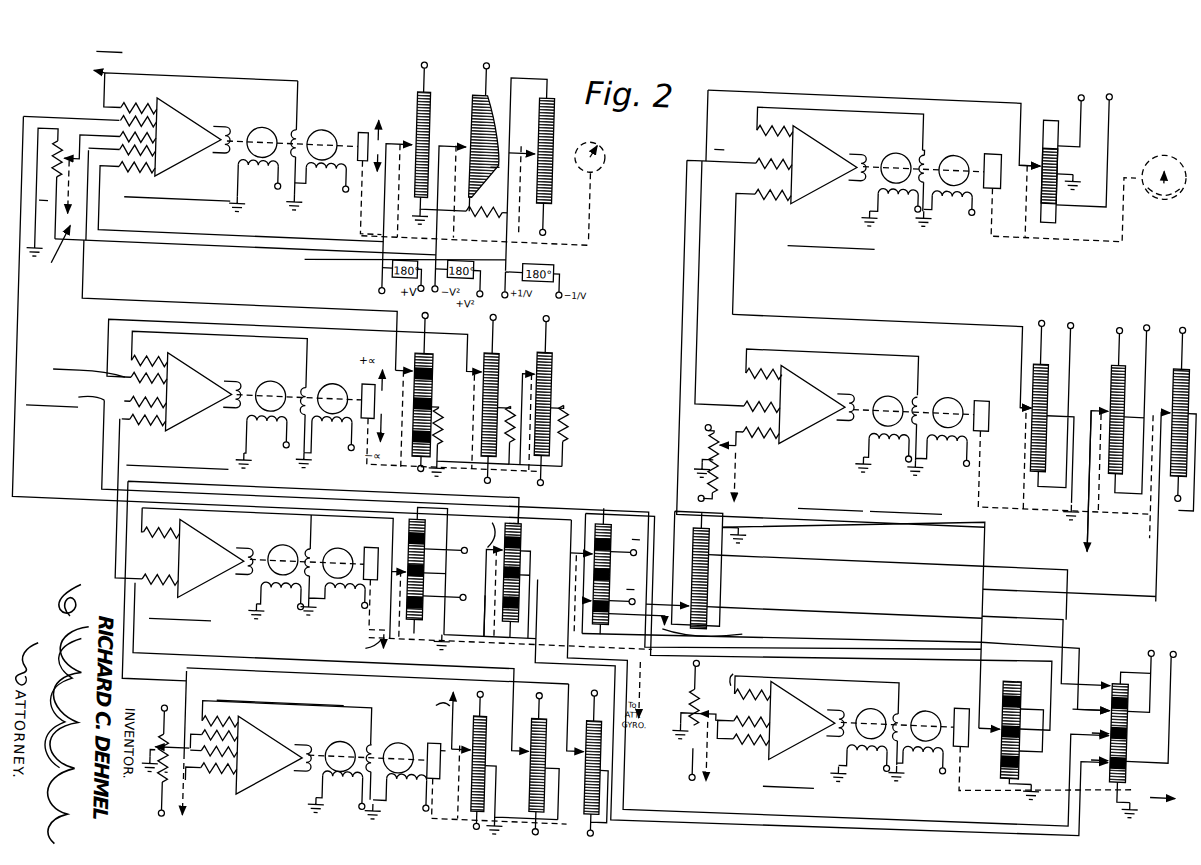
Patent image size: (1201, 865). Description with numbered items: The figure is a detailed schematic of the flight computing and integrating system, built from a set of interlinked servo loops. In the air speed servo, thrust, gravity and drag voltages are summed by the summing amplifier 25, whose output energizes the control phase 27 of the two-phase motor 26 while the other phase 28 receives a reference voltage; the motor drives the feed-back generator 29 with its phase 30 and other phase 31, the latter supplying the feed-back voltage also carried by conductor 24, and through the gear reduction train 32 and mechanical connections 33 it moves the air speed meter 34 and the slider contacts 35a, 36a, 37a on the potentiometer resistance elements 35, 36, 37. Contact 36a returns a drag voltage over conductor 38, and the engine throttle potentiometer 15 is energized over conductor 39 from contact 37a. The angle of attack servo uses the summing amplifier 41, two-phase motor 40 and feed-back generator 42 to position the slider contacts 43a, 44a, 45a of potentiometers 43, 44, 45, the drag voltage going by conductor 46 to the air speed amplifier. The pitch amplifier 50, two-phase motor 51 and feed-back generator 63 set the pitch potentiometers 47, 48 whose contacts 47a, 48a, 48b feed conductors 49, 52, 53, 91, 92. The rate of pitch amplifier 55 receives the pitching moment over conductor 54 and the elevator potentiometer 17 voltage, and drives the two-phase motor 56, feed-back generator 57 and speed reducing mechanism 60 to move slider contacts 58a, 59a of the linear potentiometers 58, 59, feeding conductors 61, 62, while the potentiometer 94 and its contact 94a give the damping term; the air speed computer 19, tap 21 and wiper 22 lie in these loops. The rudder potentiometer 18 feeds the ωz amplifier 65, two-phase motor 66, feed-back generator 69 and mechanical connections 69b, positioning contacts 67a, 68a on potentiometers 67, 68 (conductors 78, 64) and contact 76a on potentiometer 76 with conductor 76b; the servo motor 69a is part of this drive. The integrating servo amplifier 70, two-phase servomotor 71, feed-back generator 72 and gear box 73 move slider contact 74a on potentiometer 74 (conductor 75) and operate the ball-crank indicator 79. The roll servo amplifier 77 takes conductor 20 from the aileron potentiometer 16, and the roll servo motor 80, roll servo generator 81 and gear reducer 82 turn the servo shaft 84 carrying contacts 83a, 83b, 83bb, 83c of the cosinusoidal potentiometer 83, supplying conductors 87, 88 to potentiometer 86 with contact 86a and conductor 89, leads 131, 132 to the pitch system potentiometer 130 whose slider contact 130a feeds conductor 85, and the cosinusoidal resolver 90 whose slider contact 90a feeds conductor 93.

The engine throttle potentiometer 15 is at (57, 201).
The aileron potentiometer 16 is at (700, 731).
The elevator potentiometer 17 is at (177, 750).
The rudder potentiometer 18 is at (711, 456).
The air speed computer 19 is at (118, 221).
The conductor 20 is at (734, 673).
The elevator potentiometer tap 21 is at (174, 770).
The rudder potentiometer wiper 22 is at (738, 441).
The conductor 24 is at (83, 66).
The summing amplifier 25 is at (200, 121).
The two-phase motor 26 is at (258, 141).
The control phase 27 is at (222, 143).
The other phase 28 is at (245, 185).
The two-phase feed-back generator 29 is at (320, 152).
The phase 30 is at (321, 179).
The other phase 31 is at (290, 145).
The gear reduction train 32 is at (381, 152).
The mechanical connections 33 is at (464, 192).
The air speed meter 34 is at (592, 166).
The potentiometer resistance element 35 is at (433, 138).
The slider contact 35a is at (381, 212).
The potentiometer resistance element 36 is at (482, 131).
The slider contact 36a is at (449, 211).
The potentiometer resistance element 37 is at (440, 171).
The slider contact 37a is at (513, 155).
The conductor 38 is at (241, 204).
The conductor 39 is at (245, 257).
The two-phase motor 40 is at (272, 396).
The summing amplifier 41 is at (206, 388).
The feed-back generator 42 is at (336, 398).
The potentiometer 43 is at (477, 400).
The slider contact 43a is at (397, 377).
The potentiometer 44 is at (492, 402).
The contact 44a is at (470, 380).
The potentiometer 45 is at (544, 404).
The slider contact 45a is at (519, 414).
The conductor 46 is at (240, 305).
The pitch potentiometer 47 is at (414, 533).
The contact 47a is at (396, 575).
The pitch potentiometer 48 is at (611, 562).
The contact 48a is at (574, 554).
The second contact 48b is at (588, 601).
The conductor 49 is at (368, 643).
The pitch amplifier 50 is at (240, 564).
The two-phase motor 51 is at (293, 560).
The conductor 52 is at (297, 317).
The conductor 53 is at (104, 490).
The conductor 54 is at (307, 577).
The rate of pitch amplifier 55 is at (263, 753).
The two-phase motor 56 is at (360, 751).
The feed-back generator 57 is at (418, 752).
The linear potentiometer 58 is at (500, 714).
The slider contact 58a is at (437, 716).
The linear potentiometer 59 is at (547, 765).
The slider contact 59a is at (525, 752).
The speed reducing mechanism 60 is at (443, 790).
The conductor 61 is at (450, 758).
The conductor 62 is at (324, 632).
The feed-back generator 63 is at (350, 560).
The conductor 64 is at (1092, 527).
The ωz amplifier 65 is at (822, 370).
The two-phase motor 66 is at (892, 381).
The potentiometer 67 is at (1034, 346).
The contact 67a is at (1019, 392).
The potentiometer 68 is at (1109, 346).
The contact 68a is at (1090, 389).
The feed-back generator 69 is at (950, 380).
The servo motor 69a is at (980, 385).
The mechanical connections 69b is at (1010, 488).
The integrating servo amplifier 70 is at (830, 129).
The two-phase servomotor 71 is at (897, 137).
The feed-back generator 72 is at (954, 139).
The gear box 73 is at (990, 132).
The potentiometer 74 is at (1046, 94).
The slider contact 74a is at (1016, 140).
The conductor 75 is at (704, 336).
The potentiometer 76 is at (1171, 346).
The contact 76a is at (1160, 380).
The conductor 76b is at (852, 573).
The roll servo amplifier 77 is at (818, 694).
The conductor 78 is at (882, 352).
The ball-crank indicator 79 is at (1150, 132).
The roll servo motor 80 is at (880, 694).
The roll servo generator 81 is at (936, 693).
The gear reducer 82 is at (959, 719).
The cosinusoidal potentiometer 83 is at (1124, 660).
The contact 83a is at (1092, 701).
The contact 83b is at (1093, 725).
The contact 83bb is at (1112, 660).
The contact 83c is at (1118, 752).
The servo shaft 84 is at (1012, 782).
The conductor 85 is at (736, 625).
The potentiometer 86 is at (527, 572).
The contact 86a is at (489, 560).
The conductor 87 is at (829, 674).
The conductor 88 is at (816, 717).
The conductor 89 is at (490, 622).
The cosinusoidal resolver 90 is at (1014, 732).
The slider contact 90a is at (1005, 708).
The conductor 91 is at (817, 620).
The conductor 92 is at (848, 600).
The conductor 93 is at (827, 444).
The potentiometer 94 is at (601, 760).
The contact 94a is at (580, 750).
The pitch system potentiometer 130 is at (708, 570).
The slider contact 130a is at (690, 600).
The lead 131 is at (1024, 593).
The lead 132 is at (1069, 606).